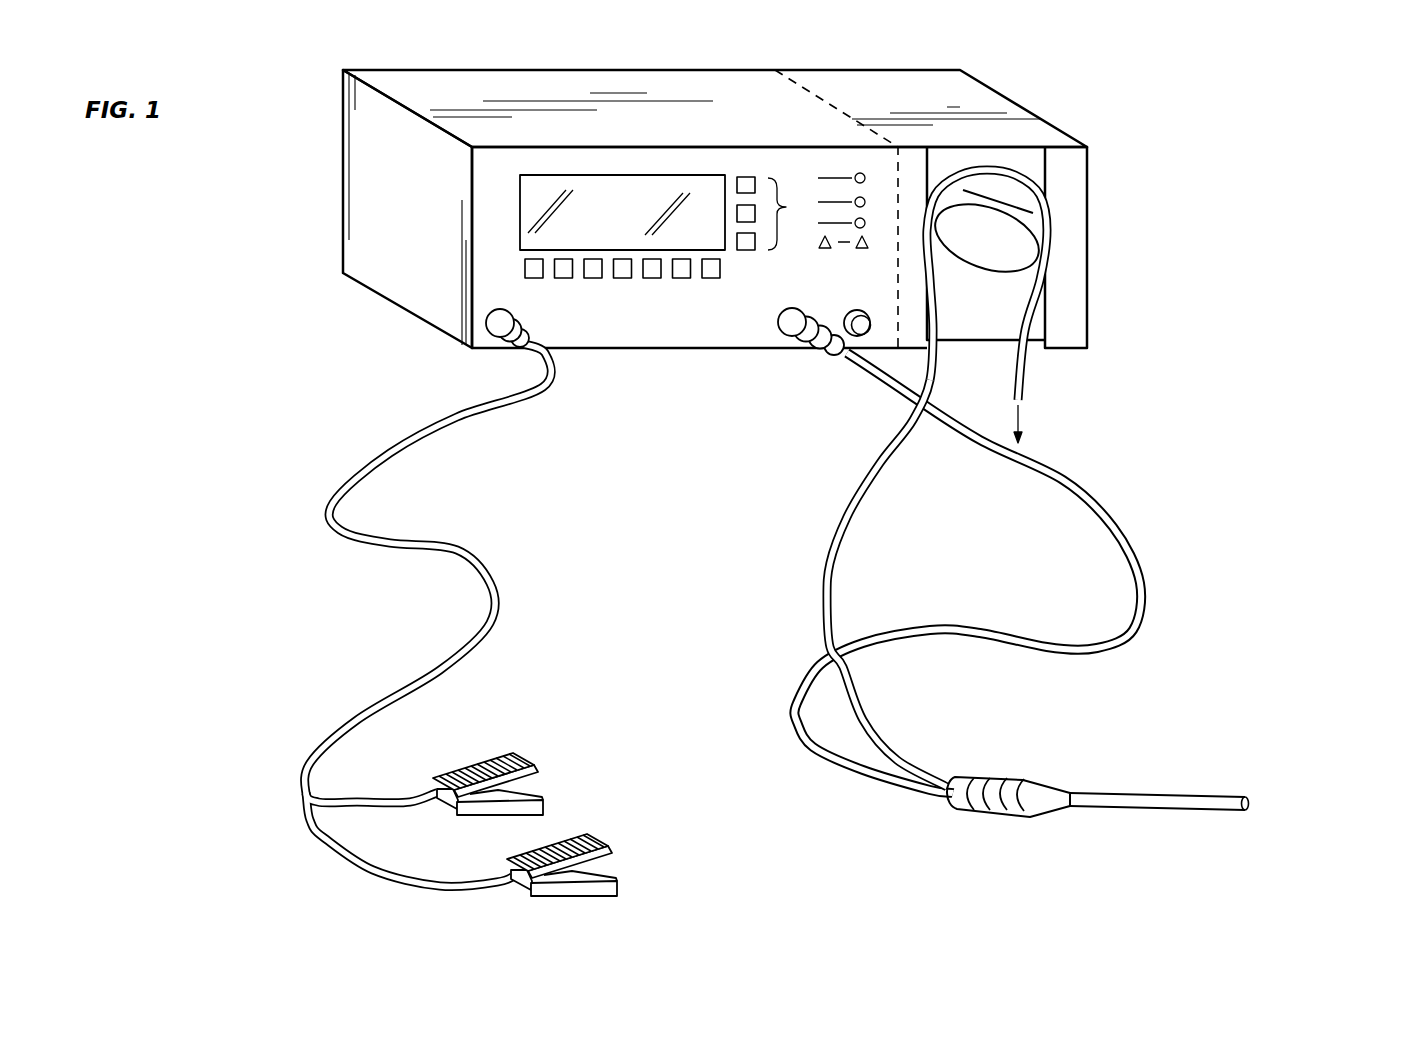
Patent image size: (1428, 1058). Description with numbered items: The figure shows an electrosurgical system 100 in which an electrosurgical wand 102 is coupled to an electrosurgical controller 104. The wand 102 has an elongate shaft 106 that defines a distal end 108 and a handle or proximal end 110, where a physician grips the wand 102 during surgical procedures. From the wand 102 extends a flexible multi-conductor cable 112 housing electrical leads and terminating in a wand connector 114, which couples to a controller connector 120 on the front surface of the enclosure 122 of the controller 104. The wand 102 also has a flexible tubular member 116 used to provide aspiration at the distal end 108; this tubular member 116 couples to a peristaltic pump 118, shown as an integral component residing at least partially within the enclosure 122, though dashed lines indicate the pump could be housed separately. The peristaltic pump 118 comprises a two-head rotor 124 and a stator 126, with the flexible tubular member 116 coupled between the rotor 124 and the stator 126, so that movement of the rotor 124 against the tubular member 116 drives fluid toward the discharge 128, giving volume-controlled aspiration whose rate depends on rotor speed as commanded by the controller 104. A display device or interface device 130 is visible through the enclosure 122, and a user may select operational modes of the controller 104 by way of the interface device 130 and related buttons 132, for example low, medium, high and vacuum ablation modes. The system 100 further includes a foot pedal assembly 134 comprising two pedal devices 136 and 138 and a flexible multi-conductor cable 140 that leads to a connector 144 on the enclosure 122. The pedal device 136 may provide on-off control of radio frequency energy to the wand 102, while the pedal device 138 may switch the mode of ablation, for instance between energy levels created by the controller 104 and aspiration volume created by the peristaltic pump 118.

The electrosurgical system 100 is at (1337, 122).
The electrosurgical wand 102 is at (1117, 716).
The electrosurgical controller 104 is at (715, 210).
The elongate shaft 106 is at (1155, 790).
The distal end 108 is at (1247, 782).
The handle or proximal end 110 is at (998, 830).
The flexible multi-conductor cable 112 is at (1117, 530).
The wand connector 114 is at (838, 360).
The flexible tubular member 116 is at (890, 732).
The peristaltic pump 118 is at (989, 227).
The controller connector 120 is at (786, 312).
The enclosure 122 is at (728, 330).
The rotor portion 124 is at (1013, 247).
The stator portion 126 is at (1020, 177).
The discharge 128 is at (1036, 407).
The display device or interface device 130 is at (634, 228).
The buttons 132 is at (786, 207).
The foot pedal assembly 134 is at (586, 667).
The pedal device 136 is at (490, 756).
The pedal device 138 is at (600, 897).
The flexible multi-conductor cable 140 is at (397, 550).
The connector 144 is at (487, 317).